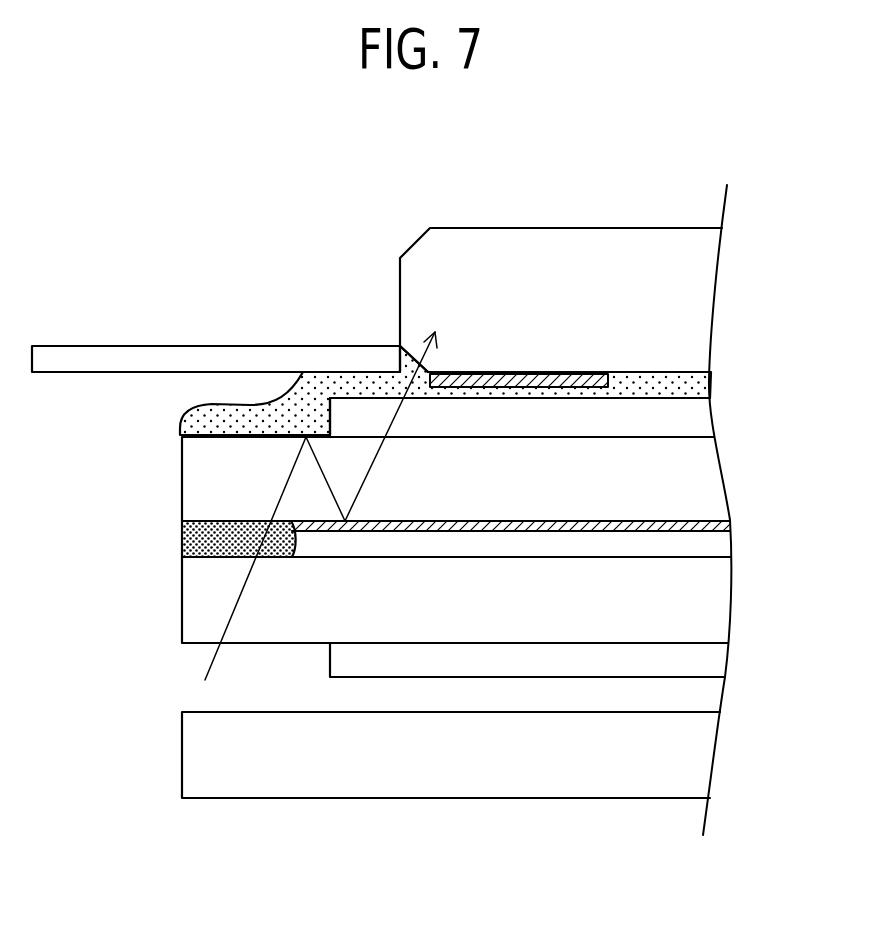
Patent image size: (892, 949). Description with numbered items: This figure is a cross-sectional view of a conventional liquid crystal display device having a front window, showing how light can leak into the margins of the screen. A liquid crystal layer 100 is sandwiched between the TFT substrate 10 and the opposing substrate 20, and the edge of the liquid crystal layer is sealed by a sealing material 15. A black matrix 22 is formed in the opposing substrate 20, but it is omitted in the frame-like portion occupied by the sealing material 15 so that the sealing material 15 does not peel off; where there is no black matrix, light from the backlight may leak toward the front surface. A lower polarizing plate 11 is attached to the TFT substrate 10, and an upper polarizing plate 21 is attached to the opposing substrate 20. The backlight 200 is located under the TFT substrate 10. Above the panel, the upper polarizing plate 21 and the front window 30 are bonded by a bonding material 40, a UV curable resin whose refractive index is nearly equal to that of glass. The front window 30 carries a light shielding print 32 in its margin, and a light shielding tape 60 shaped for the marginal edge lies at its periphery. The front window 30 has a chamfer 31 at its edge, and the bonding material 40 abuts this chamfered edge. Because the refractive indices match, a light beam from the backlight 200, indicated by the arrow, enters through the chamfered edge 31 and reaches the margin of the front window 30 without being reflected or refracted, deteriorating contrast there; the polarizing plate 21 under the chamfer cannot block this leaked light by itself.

The TFT substrate 10 is at (710, 596).
The lower polarizing plate 11 is at (713, 660).
The sealing material 15 is at (197, 544).
The opposing substrate 20 is at (697, 468).
The upper polarizing plate 21 is at (702, 414).
The black matrix 22 is at (726, 520).
The front window 30 is at (690, 305).
The chamfer 31 is at (412, 350).
The light shielding print 32 is at (505, 380).
The bonding material 40 is at (238, 415).
The light shielding tape 60 is at (148, 356).
The liquid crystal layer 100 is at (718, 543).
The backlight 200 is at (692, 755).